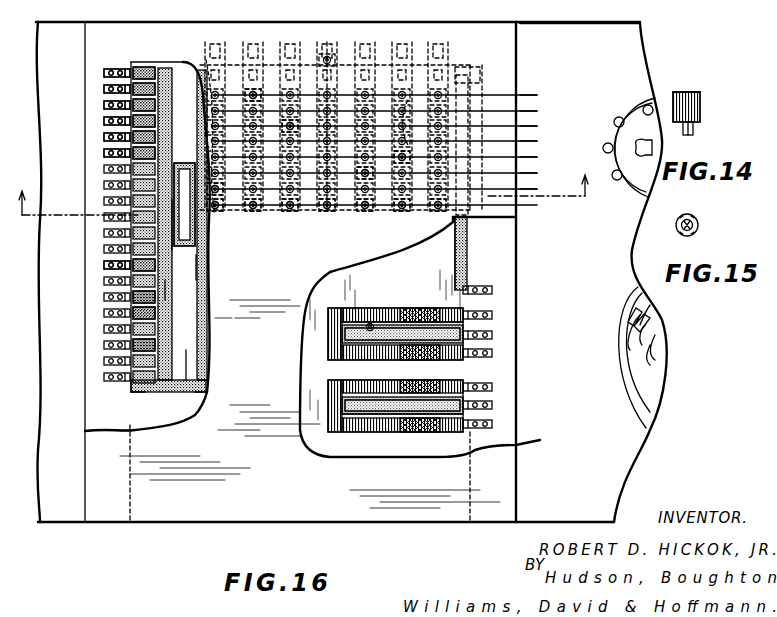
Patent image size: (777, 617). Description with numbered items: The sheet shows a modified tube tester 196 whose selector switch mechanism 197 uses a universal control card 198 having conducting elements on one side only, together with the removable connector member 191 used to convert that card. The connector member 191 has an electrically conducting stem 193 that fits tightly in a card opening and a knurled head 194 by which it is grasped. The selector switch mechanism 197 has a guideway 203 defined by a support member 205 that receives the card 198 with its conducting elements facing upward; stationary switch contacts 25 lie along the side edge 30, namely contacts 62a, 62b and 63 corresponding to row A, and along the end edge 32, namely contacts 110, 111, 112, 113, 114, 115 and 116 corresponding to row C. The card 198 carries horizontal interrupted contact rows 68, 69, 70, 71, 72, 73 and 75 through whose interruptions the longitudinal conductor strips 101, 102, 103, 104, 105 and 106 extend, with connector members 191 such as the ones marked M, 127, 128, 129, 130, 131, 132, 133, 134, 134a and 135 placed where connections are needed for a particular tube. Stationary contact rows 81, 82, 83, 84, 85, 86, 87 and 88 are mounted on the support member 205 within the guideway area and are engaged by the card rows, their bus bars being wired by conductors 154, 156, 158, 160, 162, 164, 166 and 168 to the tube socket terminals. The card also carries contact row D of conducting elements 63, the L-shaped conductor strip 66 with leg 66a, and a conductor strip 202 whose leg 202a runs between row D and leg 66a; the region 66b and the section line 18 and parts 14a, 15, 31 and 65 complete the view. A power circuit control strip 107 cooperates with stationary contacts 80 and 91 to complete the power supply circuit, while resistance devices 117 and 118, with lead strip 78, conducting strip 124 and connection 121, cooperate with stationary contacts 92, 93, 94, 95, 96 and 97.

In FIG. 16, the stationary switch contact 62a is at (134, 62).
In FIG. 16, the insulating member 65 is at (149, 62).
In FIG. 16, the conductor strip 202 is at (163, 62).
In FIG. 16, the end edge of guideway 32 is at (181, 62).
In FIG. 16, the module M is at (184, 204).
In FIG. 16, the terminal connectors 127 is at (140, 224).
In FIG. 16, the stationary switch contacts 25 is at (130, 260).
In FIG. 16, the section line 18- 18 is at (308, 209).
In FIG. 16, the conductor strip 68 is at (142, 77).
In FIG. 16, the conductor strip 69 is at (142, 93).
In FIG. 16, the conductor strip 70 is at (142, 109).
In FIG. 16, the conductor strip 71 is at (142, 125).
In FIG. 16, the conductor strip 72 is at (142, 140).
In FIG. 16, the conductor strip 73 is at (142, 154).
In FIG. 16, the lead 128 is at (186, 246).
In FIG. 16, the leg of conductor strip 66a is at (186, 268).
In FIG. 16, the contact row D is at (180, 288).
In FIG. 16, the leg of conductor strip 202a is at (150, 298).
In FIG. 16, the row of switch contacts A is at (140, 317).
In FIG. 16, the conducting elements 63 is at (157, 350).
In FIG. 16, the L-shaped conductor strip 66 is at (187, 372).
In FIG. 16, the stationary switch contact 62b is at (138, 394).
In FIG. 16, the housing flange 66b is at (206, 392).
In FIG. 16, the side edge of guideway 30 is at (135, 430).
In FIG. 16, the stationary switch contact 110 is at (205, 117).
In FIG. 16, the stationary switch contact 111 is at (238, 117).
In FIG. 16, the stationary switch contact 112 is at (271, 117).
In FIG. 16, the stationary switch contact 113 is at (312, 117).
In FIG. 16, the stationary switch contact 114 is at (351, 117).
In FIG. 16, the stationary switch contact 115 is at (387, 117).
In FIG. 16, the stationary switch contact 116 is at (429, 117).
In FIG. 16, the stationary switch contact 80 is at (375, 92).
In FIG. 16, the contact row 82 is at (375, 108).
In FIG. 16, the contact row 83 is at (375, 123).
In FIG. 16, the contact row 84 is at (375, 138).
In FIG. 16, the contact row 85 is at (375, 154).
In FIG. 16, the contact row 86 is at (375, 170).
In FIG. 16, the contact row 87 is at (375, 186).
In FIG. 16, the contact row 81 is at (458, 71).
In FIG. 16, the conductor 154 is at (537, 95).
In FIG. 16, the conductor 156 is at (537, 111).
In FIG. 16, the conductor 158 is at (537, 126).
In FIG. 16, the conductor 160 is at (537, 141).
In FIG. 16, the conductor 162 is at (537, 157).
In FIG. 16, the conductor 164 is at (537, 173).
In FIG. 16, the conductor 166 is at (537, 189).
In FIG. 16, the conductor 168 is at (537, 205).
In FIG. 16, the row of switch contacts C is at (322, 56).
In FIG. 16, the switch arm 134a is at (414, 100).
In FIG. 16, the switch strip 135 is at (420, 80).
In FIG. 16, the contact 130 is at (259, 85).
In FIG. 16, the contact 131 is at (283, 120).
In FIG. 16, the contact 133 is at (356, 170).
In FIG. 16, the contact arm 134 is at (396, 159).
In FIG. 16, the contact 129 is at (233, 193).
In FIG. 16, the conductor strip 75 is at (237, 212).
In FIG. 16, the conductor strip 101 is at (254, 216).
In FIG. 16, the conductor strip 102 is at (280, 216).
In FIG. 16, the conductor strip 103 is at (316, 211).
In FIG. 16, the conductor strip 104 is at (347, 216).
In FIG. 16, the conductor strip 105 is at (380, 212).
In FIG. 16, the conductor strip 106 is at (424, 212).
In FIG. 16, the contact column 132 is at (318, 226).
In FIG. 16, the support member 205 is at (302, 293).
In FIG. 16, the contact row 88 is at (467, 234).
In FIG. 16, the power circuit control strip 107 is at (462, 262).
In FIG. 16, the stationary switch contact 91 is at (462, 288).
In FIG. 16, the lead strip 78 is at (350, 355).
In FIG. 16, the resistance device 118 is at (352, 381).
In FIG. 16, the resistance device 117 is at (362, 314).
In FIG. 16, the connection 121 is at (372, 322).
In FIG. 16, the conducting strip 124 is at (368, 405).
In FIG. 16, the control card 198 is at (374, 447).
In FIG. 16, the base 31 is at (466, 450).
In FIG. 16, the guideway 203 is at (504, 446).
In FIG. 16, the stationary switch contact 92 is at (494, 313).
In FIG. 16, the stationary switch contact 93 is at (494, 334).
In FIG. 16, the stationary switch contact 94 is at (494, 354).
In FIG. 16, the stationary switch contact 95 is at (494, 387).
In FIG. 16, the stationary switch contact 96 is at (494, 405).
In FIG. 16, the stationary switch contact 97 is at (494, 424).
In FIG. 16, the tube tester 196 is at (588, 18).
In FIG. 16, the selector switch mechanism 197 is at (527, 56).
In FIG. 16, the dial 14a is at (640, 90).
In FIG. 16, the lens 15 is at (645, 435).
In FIG. 14, the connector member 191 is at (700, 110).
In FIG. 15, the connector member 191 is at (696, 218).
In FIG. 14, the knurled head 194 is at (698, 96).
In FIG. 15, the knurled head 194 is at (699, 224).
In FIG. 14, the stem 193 is at (694, 128).
In FIG. 15, the stem 193 is at (697, 232).